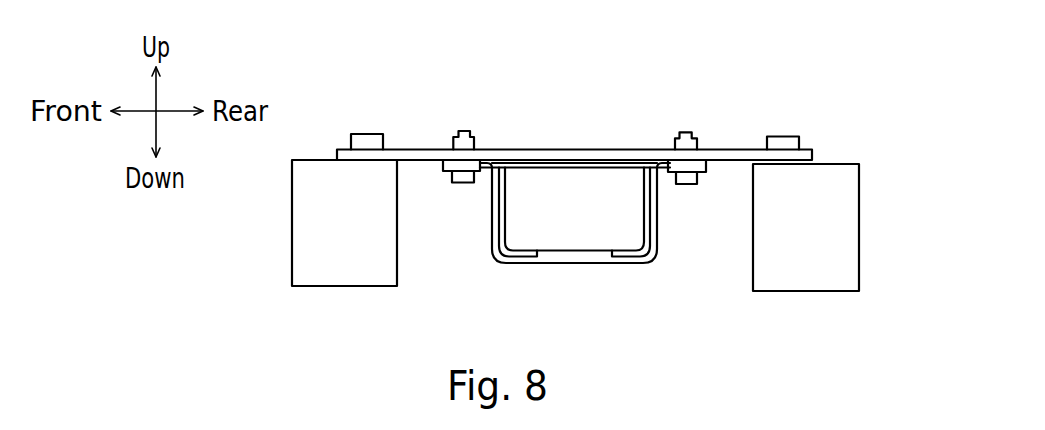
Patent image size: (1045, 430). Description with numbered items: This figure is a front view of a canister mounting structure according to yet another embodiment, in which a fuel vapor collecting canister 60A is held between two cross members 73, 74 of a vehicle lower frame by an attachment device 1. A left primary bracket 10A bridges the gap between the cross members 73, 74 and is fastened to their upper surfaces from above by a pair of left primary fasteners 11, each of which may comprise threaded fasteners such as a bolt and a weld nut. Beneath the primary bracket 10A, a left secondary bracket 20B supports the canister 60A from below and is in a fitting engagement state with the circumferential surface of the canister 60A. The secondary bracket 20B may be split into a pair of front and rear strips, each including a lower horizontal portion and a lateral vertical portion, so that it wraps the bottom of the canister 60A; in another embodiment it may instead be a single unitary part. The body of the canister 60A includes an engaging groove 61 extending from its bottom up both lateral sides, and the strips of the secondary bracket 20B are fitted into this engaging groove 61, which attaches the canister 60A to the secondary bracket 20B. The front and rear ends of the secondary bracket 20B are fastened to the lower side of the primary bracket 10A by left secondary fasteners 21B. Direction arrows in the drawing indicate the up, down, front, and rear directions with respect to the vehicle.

The first attachment device 1 is at (656, 107).
The left primary bracket 10A is at (417, 148).
The left primary fastener 11 is at (368, 133).
The left secondary fastener 21B is at (462, 184).
The left secondary bracket 20B is at (507, 262).
The engaging groove 61 is at (492, 252).
The canister 60A is at (575, 187).
The cross member 73 is at (292, 222).
The cross member 74 is at (859, 235).